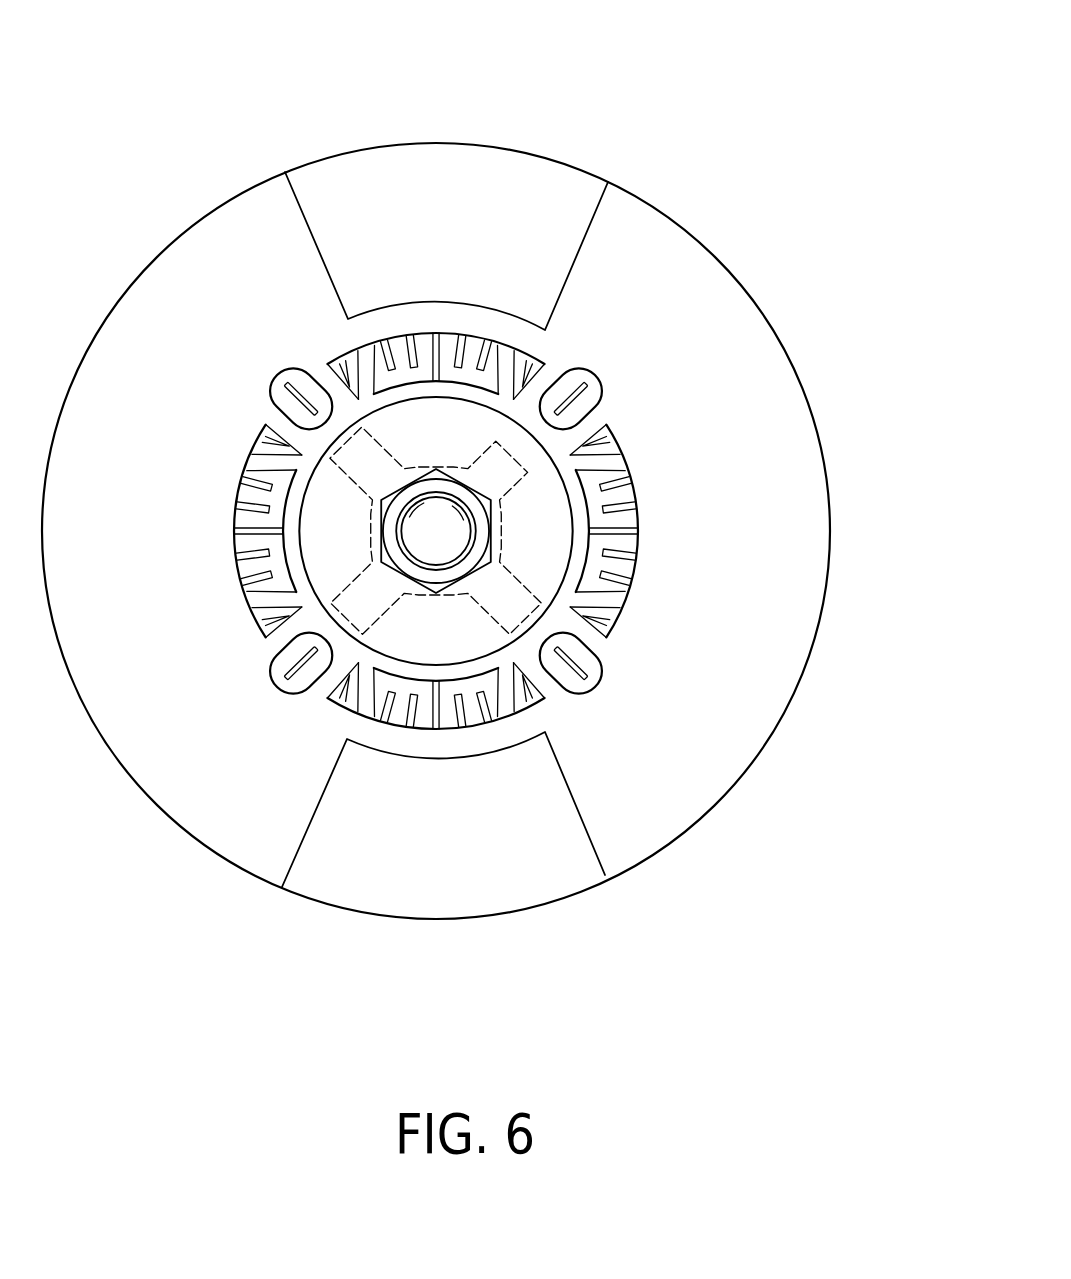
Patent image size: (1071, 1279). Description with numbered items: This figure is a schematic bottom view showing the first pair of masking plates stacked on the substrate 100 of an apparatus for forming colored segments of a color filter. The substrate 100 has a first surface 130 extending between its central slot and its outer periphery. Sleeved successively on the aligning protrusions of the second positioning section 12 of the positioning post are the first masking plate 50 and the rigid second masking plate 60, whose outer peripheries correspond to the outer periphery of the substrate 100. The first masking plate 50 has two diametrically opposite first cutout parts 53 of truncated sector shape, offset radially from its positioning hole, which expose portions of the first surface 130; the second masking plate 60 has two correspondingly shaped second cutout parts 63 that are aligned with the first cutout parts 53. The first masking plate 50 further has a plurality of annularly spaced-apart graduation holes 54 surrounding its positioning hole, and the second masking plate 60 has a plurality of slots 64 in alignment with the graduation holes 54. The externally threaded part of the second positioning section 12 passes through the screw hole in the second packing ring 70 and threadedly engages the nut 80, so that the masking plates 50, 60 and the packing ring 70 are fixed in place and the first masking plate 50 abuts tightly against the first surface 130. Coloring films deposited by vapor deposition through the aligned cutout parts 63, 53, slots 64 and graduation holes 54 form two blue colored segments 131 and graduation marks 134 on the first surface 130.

The substrate 100 is at (347, 152).
The first surface 130 is at (390, 170).
The second cutout parts 63 is at (485, 545).
The first cutout parts 53 is at (485, 545).
The colored segments 131 is at (478, 218).
The first masking plate 50 is at (436, 503).
The second masking plate 60 is at (655, 201).
The slots 64 is at (587, 477).
The graduation holes 54 is at (587, 477).
The graduation marks 134 is at (528, 360).
The second packing ring 70 is at (560, 614).
The nut 80 is at (474, 556).
The second positioning section 12 is at (417, 597).